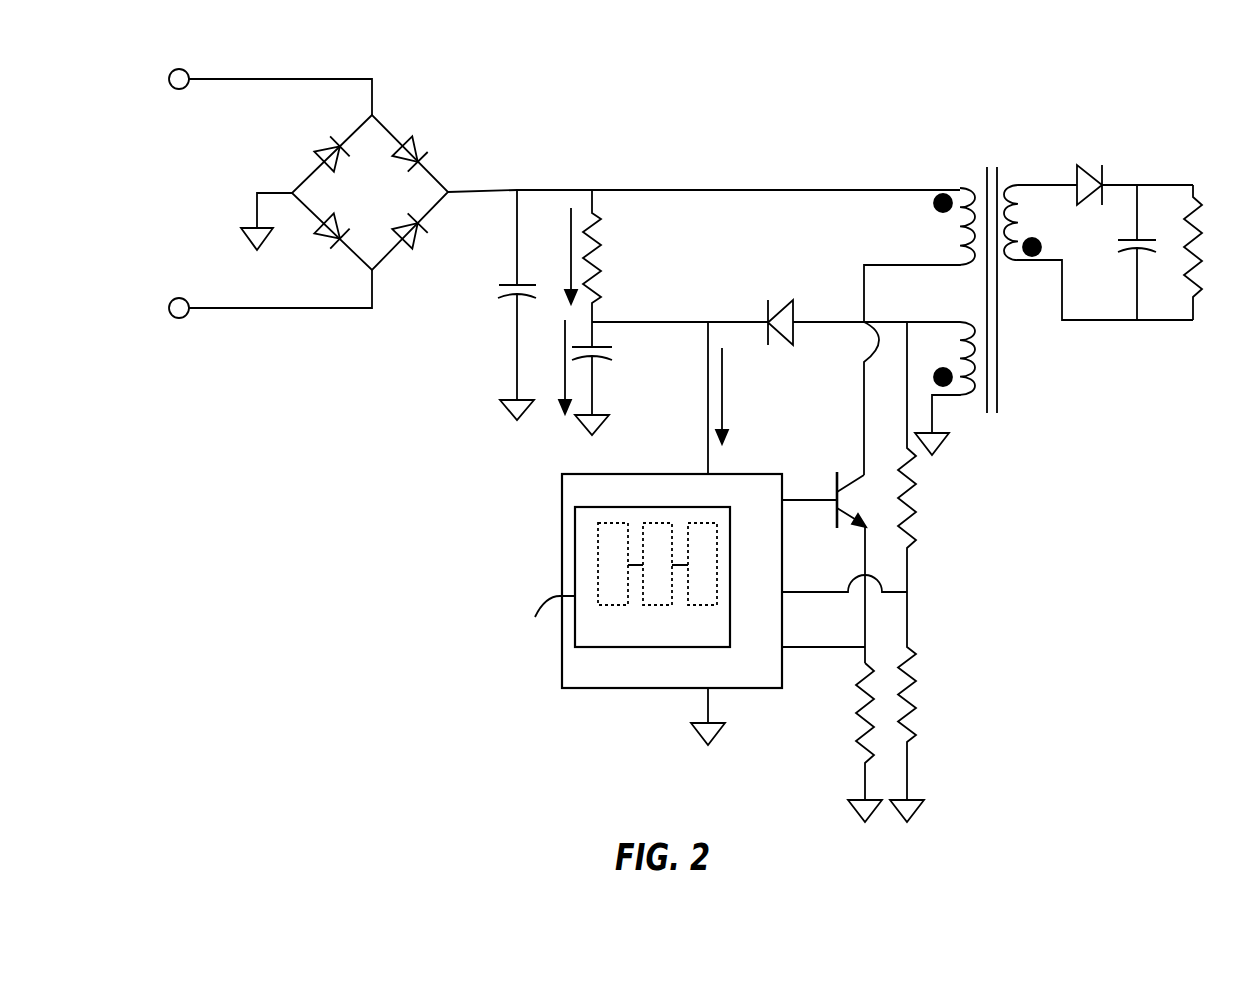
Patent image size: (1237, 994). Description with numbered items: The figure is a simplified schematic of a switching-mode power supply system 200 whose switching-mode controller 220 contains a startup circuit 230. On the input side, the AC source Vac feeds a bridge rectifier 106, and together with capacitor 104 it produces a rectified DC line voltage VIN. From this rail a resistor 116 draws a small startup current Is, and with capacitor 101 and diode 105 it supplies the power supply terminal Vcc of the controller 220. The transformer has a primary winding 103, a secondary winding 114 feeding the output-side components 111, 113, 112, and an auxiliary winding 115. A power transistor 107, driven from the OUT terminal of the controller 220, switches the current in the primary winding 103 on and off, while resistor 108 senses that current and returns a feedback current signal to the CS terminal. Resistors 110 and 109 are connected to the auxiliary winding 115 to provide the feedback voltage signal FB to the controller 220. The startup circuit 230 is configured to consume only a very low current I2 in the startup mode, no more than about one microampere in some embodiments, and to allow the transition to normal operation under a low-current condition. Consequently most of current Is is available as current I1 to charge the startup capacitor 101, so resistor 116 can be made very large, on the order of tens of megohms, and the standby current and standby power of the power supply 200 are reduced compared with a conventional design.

The switching-mode power supply system 200 is at (897, 72).
The bridge rectifier 106 is at (397, 115).
The capacitor 104 is at (498, 298).
The resistor 116 is at (607, 250).
The capacitor 101 is at (613, 358).
The diode 105 is at (778, 297).
The primary winding 103 is at (950, 229).
The auxiliary winding 115 is at (950, 340).
The secondary winding 114 is at (1043, 185).
The output diode 111 is at (1087, 158).
The output capacitor 113 is at (1113, 241).
The load resistor 112 is at (1185, 258).
The power transistor 107 is at (826, 473).
The resistor 110 is at (918, 515).
The resistor 109 is at (918, 707).
The resistor 108 is at (862, 702).
The switching-mode controller 220 is at (562, 550).
The startup circuit 230 is at (678, 637).